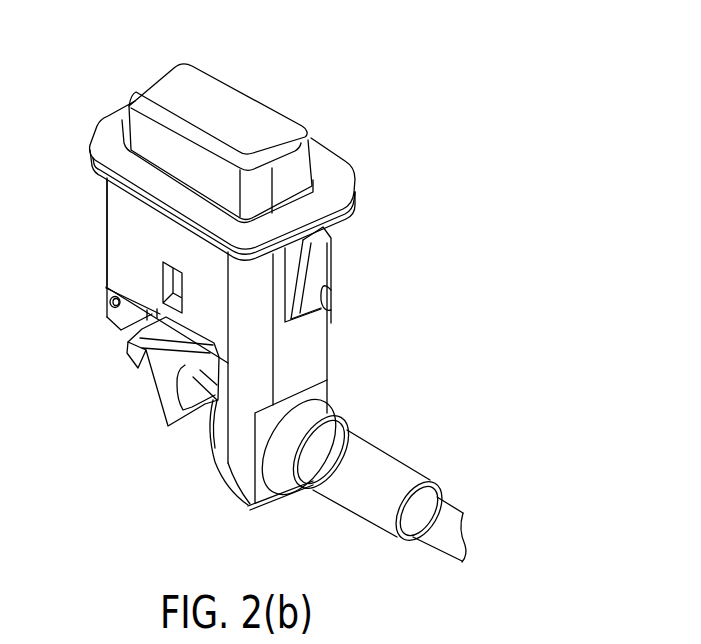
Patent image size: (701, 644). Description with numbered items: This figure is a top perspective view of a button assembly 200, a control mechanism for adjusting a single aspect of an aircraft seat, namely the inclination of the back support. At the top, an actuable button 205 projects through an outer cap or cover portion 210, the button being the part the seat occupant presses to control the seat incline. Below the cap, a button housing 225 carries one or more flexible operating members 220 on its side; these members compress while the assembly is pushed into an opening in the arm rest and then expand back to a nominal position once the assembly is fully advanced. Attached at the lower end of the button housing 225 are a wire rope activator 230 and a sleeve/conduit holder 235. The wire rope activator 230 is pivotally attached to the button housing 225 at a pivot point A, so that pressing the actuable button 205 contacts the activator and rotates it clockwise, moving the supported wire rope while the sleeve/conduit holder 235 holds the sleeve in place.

The button assembly 200 is at (548, 70).
The actuable button 205 is at (238, 112).
The outer cap or cover portion 210 is at (333, 170).
The flexible operating members 220 is at (328, 257).
The button housing 225 is at (125, 253).
The pivot point A is at (107, 302).
The wire rope activator 230 is at (138, 391).
The sleeve/conduit holder 235 is at (237, 457).